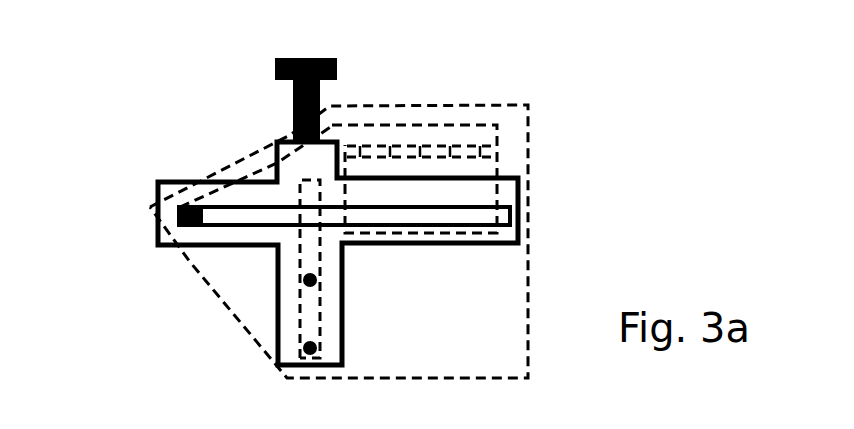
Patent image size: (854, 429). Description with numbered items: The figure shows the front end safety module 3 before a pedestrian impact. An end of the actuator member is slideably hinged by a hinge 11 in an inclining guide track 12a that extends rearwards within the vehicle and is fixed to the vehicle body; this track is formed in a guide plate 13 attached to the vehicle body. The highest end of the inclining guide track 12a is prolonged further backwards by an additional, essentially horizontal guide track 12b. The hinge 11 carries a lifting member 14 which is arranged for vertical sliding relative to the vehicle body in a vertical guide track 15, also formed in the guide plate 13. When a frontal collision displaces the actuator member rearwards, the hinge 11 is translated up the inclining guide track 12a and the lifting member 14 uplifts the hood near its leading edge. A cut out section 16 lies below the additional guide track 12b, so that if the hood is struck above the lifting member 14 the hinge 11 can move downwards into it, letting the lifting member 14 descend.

The front end safety module 3 is at (487, 72).
The hinge 11 is at (208, 210).
The inclining guide track 12a is at (268, 176).
The additional essentially horizontal guide track 12b is at (497, 128).
The guide plate 13 is at (500, 287).
The lifting member 14 is at (290, 263).
The vertical guide track 15 is at (310, 318).
The cut out section 16 is at (482, 170).